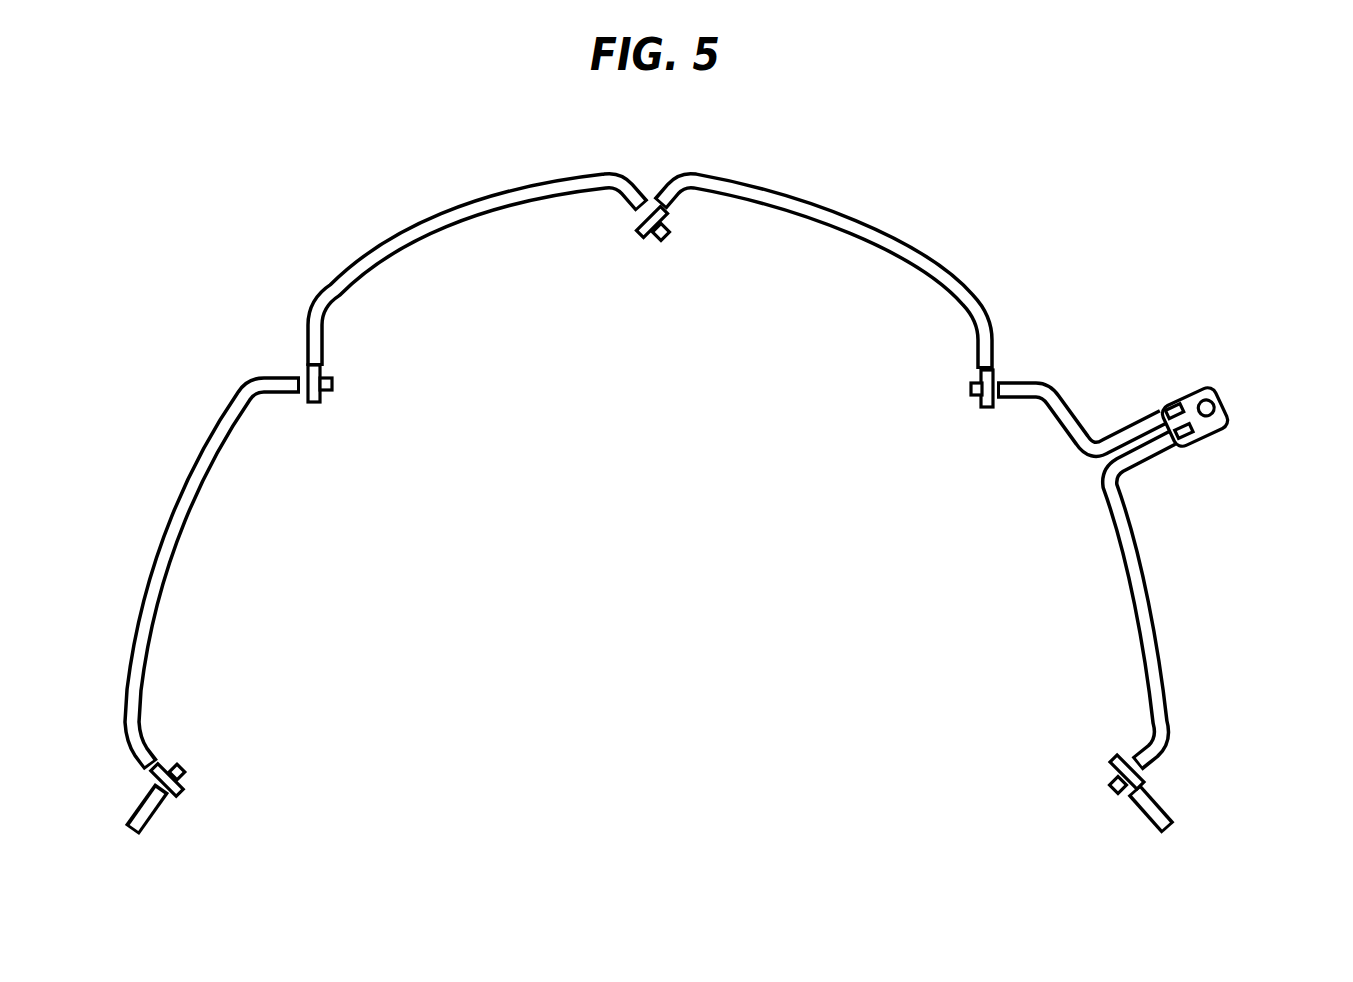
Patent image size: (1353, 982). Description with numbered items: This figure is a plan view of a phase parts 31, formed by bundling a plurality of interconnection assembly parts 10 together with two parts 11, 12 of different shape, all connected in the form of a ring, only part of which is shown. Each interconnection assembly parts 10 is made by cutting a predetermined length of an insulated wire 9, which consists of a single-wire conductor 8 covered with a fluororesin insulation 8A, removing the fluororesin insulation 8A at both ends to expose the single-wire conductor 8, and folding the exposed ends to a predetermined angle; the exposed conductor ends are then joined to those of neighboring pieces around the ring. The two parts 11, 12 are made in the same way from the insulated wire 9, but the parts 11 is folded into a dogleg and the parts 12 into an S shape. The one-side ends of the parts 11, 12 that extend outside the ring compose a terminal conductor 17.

The phase parts 31 is at (292, 224).
The interconnection assembly parts 10 is at (1233, 817).
The single-wire conductor 8 is at (641, 217).
The fluororesin insulation 8A is at (1172, 727).
The insulated wire 9 is at (1248, 770).
The parts 11 is at (1050, 415).
The parts 12 is at (1152, 586).
The terminal conductor 17 is at (1199, 392).